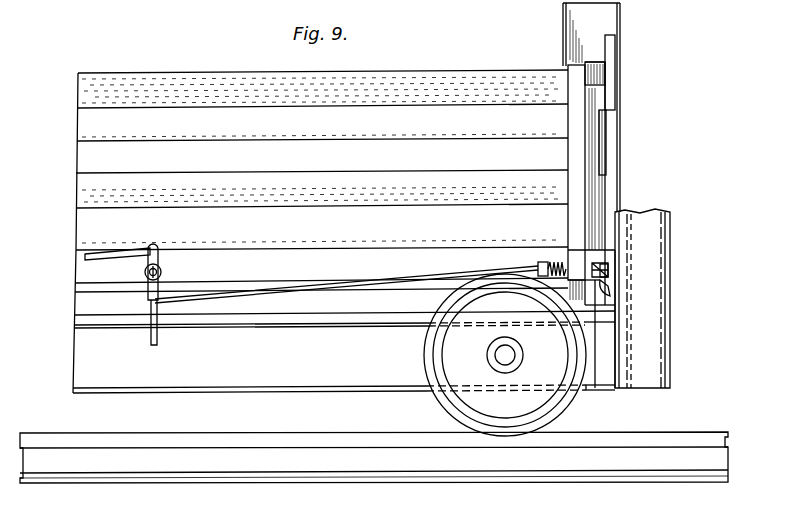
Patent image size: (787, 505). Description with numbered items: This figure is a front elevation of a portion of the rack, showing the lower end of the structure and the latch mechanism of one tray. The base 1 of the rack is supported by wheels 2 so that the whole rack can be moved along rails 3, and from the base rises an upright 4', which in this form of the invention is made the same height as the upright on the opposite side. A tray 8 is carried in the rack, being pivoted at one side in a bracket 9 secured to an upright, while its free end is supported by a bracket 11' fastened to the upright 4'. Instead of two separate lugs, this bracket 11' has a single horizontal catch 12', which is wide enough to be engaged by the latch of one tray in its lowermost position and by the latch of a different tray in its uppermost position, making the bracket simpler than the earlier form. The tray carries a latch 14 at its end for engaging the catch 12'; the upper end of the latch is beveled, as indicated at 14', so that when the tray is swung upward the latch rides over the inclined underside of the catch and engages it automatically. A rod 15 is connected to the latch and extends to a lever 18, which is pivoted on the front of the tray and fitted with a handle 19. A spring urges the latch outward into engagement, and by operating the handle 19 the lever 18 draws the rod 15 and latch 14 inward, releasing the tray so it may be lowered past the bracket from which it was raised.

The base 1 is at (598, 382).
The wheels 2 is at (468, 398).
The rails 3 is at (273, 441).
The upright 4' is at (662, 298).
The tray 8 is at (573, 97).
The bracket 9 is at (611, 100).
The bracket 11' is at (654, 254).
The catch 12' is at (656, 278).
The latch 14 is at (560, 248).
The beveled upper end of latch 14' is at (634, 225).
The rod 15 is at (327, 289).
The lever 18 is at (158, 288).
The handle 19 is at (160, 340).